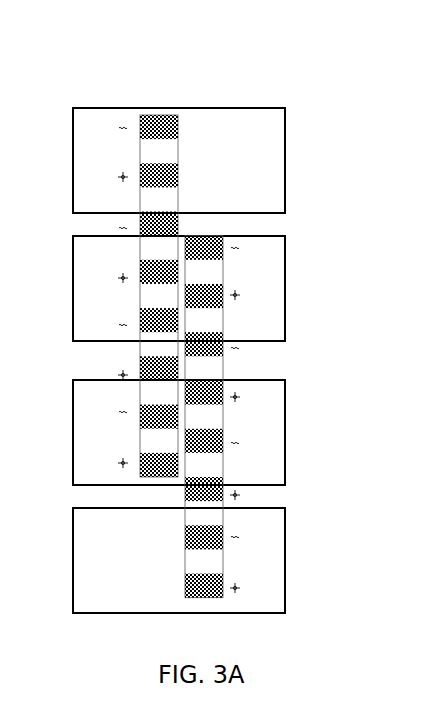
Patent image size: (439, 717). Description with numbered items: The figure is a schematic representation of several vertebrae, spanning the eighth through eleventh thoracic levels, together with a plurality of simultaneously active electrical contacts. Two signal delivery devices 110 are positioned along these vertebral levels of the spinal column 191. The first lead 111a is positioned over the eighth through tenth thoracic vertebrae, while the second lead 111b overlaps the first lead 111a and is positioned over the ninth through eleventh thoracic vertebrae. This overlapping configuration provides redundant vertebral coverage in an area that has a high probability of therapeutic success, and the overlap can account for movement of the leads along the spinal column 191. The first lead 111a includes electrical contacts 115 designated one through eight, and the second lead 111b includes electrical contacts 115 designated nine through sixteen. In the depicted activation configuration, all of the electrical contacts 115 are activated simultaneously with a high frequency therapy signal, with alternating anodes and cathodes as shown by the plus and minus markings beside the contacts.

The spinal column 191 is at (319, 100).
The signal delivery devices 110 is at (283, 362).
The first lead 111a is at (152, 107).
The second lead 111b is at (211, 233).
The electrical contacts 115 is at (182, 120).